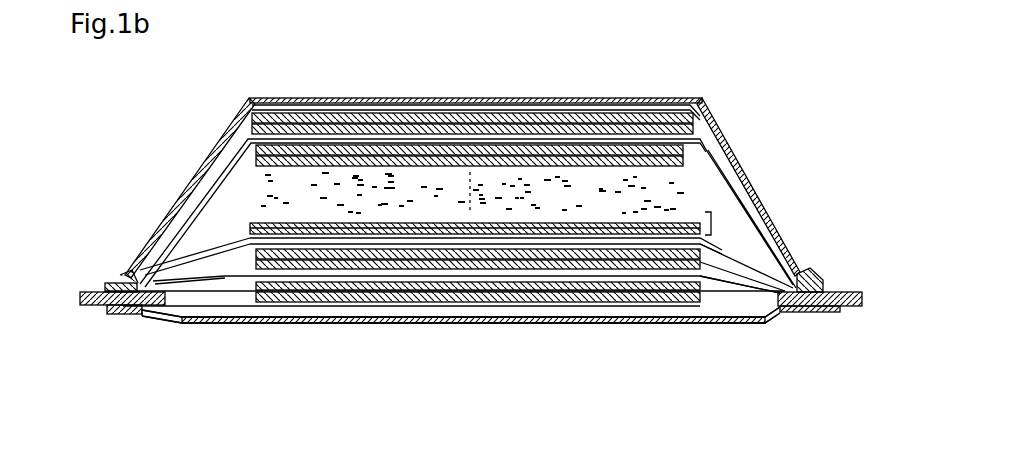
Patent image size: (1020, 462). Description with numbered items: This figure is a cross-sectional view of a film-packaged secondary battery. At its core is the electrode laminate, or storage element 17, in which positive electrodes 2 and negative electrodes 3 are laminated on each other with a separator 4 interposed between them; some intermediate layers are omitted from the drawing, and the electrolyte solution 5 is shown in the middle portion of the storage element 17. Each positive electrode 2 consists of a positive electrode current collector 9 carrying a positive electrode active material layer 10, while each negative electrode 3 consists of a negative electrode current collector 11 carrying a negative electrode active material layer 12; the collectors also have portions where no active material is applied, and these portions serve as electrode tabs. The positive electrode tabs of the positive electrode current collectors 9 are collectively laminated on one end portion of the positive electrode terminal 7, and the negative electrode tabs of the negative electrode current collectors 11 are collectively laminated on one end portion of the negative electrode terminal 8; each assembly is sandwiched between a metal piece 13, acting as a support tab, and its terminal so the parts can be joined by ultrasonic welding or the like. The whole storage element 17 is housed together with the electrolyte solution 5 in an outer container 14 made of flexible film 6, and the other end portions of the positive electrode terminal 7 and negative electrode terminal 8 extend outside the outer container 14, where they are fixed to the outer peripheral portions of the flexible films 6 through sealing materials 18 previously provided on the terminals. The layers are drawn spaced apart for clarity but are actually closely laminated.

The positive electrode 2 is at (244, 145).
The negative electrode 3 is at (722, 222).
The separator 4 is at (290, 262).
The electrolyte solution 5 is at (426, 173).
The flexible film 6 is at (476, 100).
The positive electrode terminal 7 is at (830, 312).
The negative electrode terminal 8 is at (100, 302).
The positive electrode current collector 9 is at (760, 258).
The positive electrode active material layer 10 is at (597, 155).
The negative electrode current collector 11 is at (213, 268).
The negative electrode active material layer 12 is at (338, 130).
The metal piece 13 is at (108, 284).
The outer container 14 is at (750, 146).
The electrode laminate 17 is at (527, 325).
The sealing material 18 is at (120, 306).